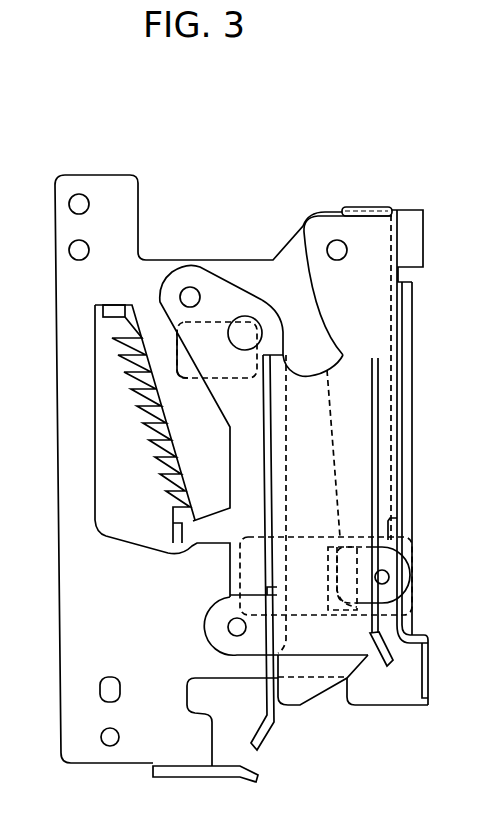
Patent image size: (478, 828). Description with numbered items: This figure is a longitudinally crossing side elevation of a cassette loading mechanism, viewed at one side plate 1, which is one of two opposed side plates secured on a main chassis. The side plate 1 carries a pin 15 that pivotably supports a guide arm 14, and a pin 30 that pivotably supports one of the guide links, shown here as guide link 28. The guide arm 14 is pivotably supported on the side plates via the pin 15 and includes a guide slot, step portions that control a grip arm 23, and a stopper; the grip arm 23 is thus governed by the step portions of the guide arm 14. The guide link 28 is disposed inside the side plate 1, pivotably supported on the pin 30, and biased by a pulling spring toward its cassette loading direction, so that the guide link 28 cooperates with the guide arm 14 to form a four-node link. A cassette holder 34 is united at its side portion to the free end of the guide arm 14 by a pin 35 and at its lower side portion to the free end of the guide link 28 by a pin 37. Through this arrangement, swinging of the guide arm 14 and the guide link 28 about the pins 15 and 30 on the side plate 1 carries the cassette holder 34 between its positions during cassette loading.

The side plate 1 is at (68, 584).
The guide arm 14 is at (380, 320).
The pin 15 is at (337, 240).
The grip arm 23 is at (130, 390).
The guide link 28 is at (215, 283).
The pin 30 is at (190, 290).
The cassette holder 34 is at (302, 693).
The pin 35 is at (238, 636).
The pin 37 is at (389, 577).